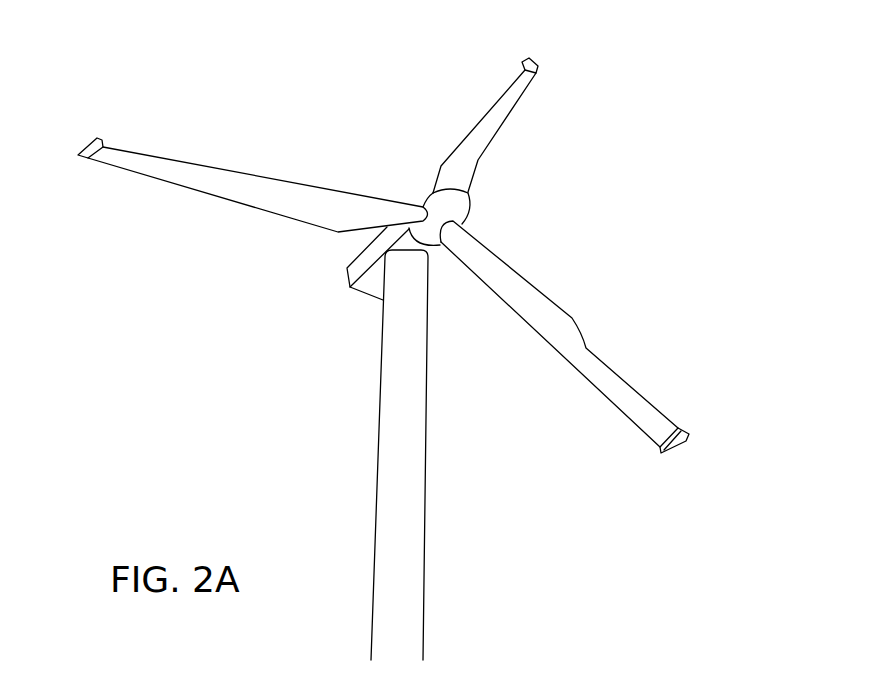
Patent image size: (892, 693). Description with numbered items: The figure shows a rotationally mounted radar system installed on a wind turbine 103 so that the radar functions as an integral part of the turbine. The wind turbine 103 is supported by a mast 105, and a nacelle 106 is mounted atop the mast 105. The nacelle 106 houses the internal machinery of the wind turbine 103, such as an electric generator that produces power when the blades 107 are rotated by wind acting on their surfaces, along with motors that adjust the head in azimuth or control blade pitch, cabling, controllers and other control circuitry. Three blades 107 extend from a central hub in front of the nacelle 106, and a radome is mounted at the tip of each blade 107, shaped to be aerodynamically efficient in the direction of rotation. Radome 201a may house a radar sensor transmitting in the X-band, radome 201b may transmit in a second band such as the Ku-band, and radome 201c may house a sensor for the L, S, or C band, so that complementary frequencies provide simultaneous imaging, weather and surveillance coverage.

The wind turbine 103 is at (228, 405).
The mast 105 is at (380, 435).
The nacelle 106 is at (345, 278).
The blades 107 is at (279, 186).
The radome 201a is at (88, 143).
The radome 201b is at (537, 63).
The radome 201c is at (685, 443).